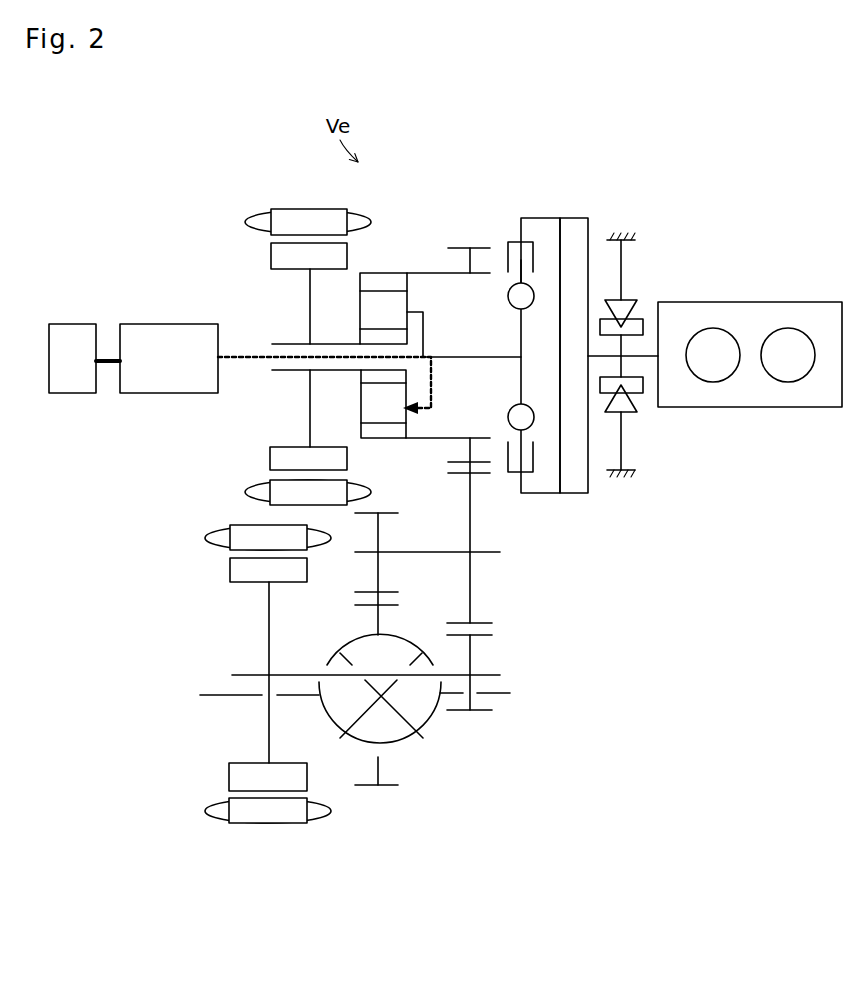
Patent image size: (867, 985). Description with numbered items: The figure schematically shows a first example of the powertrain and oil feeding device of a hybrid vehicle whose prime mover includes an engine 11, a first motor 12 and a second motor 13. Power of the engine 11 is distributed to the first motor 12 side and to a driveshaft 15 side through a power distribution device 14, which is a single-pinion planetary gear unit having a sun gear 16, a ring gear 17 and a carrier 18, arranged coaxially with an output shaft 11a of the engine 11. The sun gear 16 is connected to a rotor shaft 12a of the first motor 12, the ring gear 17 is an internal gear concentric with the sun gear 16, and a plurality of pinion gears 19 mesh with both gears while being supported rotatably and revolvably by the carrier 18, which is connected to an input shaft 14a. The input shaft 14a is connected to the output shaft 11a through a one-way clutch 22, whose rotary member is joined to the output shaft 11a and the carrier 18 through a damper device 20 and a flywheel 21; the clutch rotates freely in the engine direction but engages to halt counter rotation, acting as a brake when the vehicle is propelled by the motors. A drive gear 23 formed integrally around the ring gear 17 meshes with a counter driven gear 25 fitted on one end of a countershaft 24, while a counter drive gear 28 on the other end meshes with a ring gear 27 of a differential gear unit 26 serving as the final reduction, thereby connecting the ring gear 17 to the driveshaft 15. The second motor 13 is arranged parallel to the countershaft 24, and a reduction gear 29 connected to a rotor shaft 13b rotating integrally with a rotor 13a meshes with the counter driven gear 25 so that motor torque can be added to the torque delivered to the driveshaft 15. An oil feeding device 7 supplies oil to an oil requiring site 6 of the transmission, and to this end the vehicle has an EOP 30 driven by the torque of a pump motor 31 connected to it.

The oil requiring site 6 is at (402, 308).
The oil feeding device 7 is at (146, 305).
The engine 11 is at (750, 407).
The output shaft 11a is at (650, 358).
The first motor 12 is at (232, 262).
The rotor shaft 12a is at (283, 445).
The second motor 13 is at (228, 618).
The rotor 13a is at (240, 781).
The rotor shaft 13b is at (288, 673).
The power distribution device 14 is at (422, 240).
The input shaft 14a is at (472, 358).
The driveshaft 15 is at (505, 698).
The sun gear 16 is at (360, 376).
The ring gear 17 is at (360, 290).
The carrier 18 is at (424, 329).
The pinion gears 19 is at (407, 299).
The damper device 20 is at (513, 226).
The flywheel 21 is at (575, 232).
The one-way clutch 22 is at (650, 272).
The drive gear 23 is at (459, 248).
The countershaft 24 is at (437, 551).
The counter driven gear 25 is at (492, 627).
The differential gear unit 26 is at (432, 753).
The ring gear 27 is at (380, 787).
The counter drive gear 28 is at (388, 512).
The reduction gear 29 is at (463, 712).
The EOP 30 is at (168, 395).
The pump motor 31 is at (78, 395).